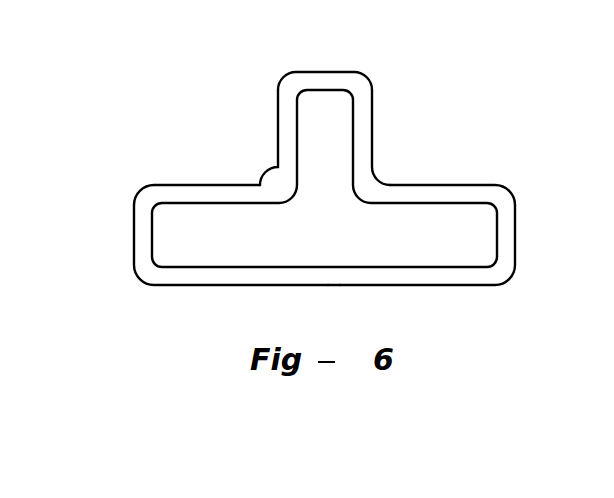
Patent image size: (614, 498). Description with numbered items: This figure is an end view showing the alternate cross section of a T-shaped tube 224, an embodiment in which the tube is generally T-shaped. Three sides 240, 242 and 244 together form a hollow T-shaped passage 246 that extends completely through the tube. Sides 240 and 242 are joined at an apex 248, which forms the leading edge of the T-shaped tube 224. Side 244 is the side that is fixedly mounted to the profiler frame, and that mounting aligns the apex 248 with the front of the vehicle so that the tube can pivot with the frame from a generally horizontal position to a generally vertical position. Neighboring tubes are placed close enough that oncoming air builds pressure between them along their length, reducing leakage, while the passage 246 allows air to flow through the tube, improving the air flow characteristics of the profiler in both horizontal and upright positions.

The T-shaped tube 224 is at (364, 173).
The side 240 is at (372, 125).
The side 242 is at (278, 127).
The side 244 is at (335, 285).
The hollow T-shaped passage 246 is at (330, 232).
The apex 248 is at (323, 72).